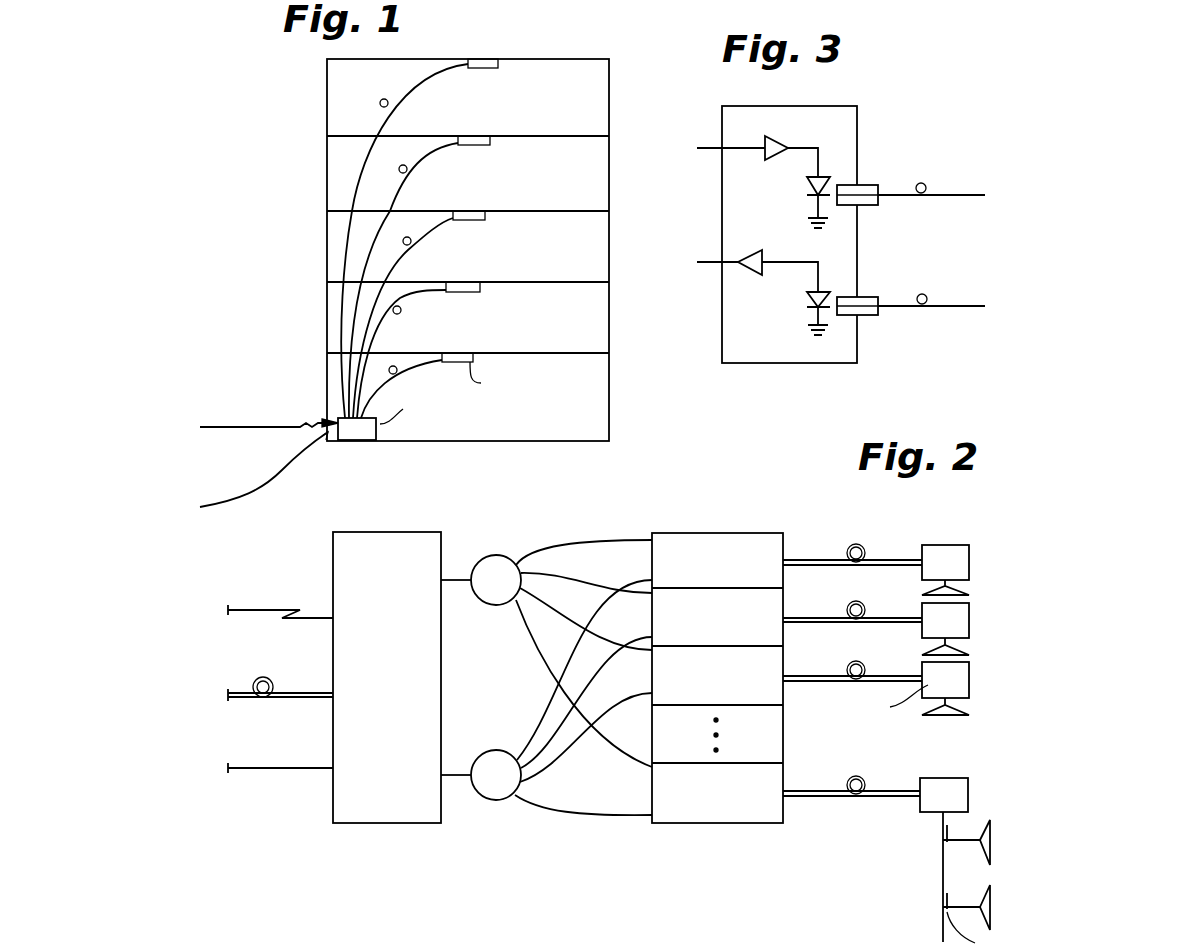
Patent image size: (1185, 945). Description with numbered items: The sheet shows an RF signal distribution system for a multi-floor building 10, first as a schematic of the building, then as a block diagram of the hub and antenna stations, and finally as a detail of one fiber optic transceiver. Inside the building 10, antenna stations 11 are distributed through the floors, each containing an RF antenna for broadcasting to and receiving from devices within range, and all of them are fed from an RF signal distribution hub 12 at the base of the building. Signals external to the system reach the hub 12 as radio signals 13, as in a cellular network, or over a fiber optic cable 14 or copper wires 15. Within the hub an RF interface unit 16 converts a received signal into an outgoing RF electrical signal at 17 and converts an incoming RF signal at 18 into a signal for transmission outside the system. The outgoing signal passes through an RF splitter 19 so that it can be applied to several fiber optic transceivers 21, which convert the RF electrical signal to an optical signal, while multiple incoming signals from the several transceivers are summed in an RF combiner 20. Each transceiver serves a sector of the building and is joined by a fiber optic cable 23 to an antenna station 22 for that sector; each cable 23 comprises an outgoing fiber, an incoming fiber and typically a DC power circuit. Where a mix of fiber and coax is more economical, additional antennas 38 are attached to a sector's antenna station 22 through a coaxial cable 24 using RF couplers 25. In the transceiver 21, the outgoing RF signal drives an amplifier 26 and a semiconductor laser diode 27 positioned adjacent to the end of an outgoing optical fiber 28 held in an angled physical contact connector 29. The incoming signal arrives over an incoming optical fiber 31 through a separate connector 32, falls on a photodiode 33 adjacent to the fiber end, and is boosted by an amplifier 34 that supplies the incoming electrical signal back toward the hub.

In FIG. 1, the multi-floor building 10 is at (609, 312).
In FIG. 1, the antenna station 11 is at (486, 59).
In FIG. 1, the RF signal distribution hub 12 is at (362, 437).
In FIG. 1, the radio signals 13 is at (247, 425).
In FIG. 2, the radio signals 13 is at (265, 608).
In FIG. 1, the fiber optic cable 14 is at (266, 481).
In FIG. 2, the fiber optic cable 14 is at (298, 690).
In FIG. 2, the copper wires 15 is at (301, 750).
In FIG. 2, the RF interface unit 16 is at (392, 823).
In FIG. 2, the outgoing RF electrical signal 17 is at (452, 578).
In FIG. 2, the incoming RF signal 18 is at (465, 770).
In FIG. 2, the RF splitter 19 is at (492, 607).
In FIG. 2, the RF combiner 20 is at (505, 800).
In FIG. 3, the fiber optic transceiver 21 is at (857, 345).
In FIG. 2, the fiber optic transceiver 21 is at (742, 815).
In FIG. 2, the antenna station 22 is at (969, 552).
In FIG. 2, the fiber optic cable 23 is at (868, 547).
In FIG. 2, the coaxial cable 24 is at (943, 858).
In FIG. 2, the RF coupler 25 is at (984, 928).
In FIG. 3, the amplifier 26 is at (780, 142).
In FIG. 3, the semiconductor laser diode 27 is at (826, 182).
In FIG. 3, the outgoing optical fiber 28 is at (950, 188).
In FIG. 3, the angled physical contact connector 29 is at (860, 186).
In FIG. 3, the incoming optical fiber 31 is at (942, 305).
In FIG. 3, the connector 32 is at (862, 297).
In FIG. 3, the photodiode 33 is at (805, 297).
In FIG. 3, the amplifier 34 is at (750, 252).
In FIG. 2, the antenna 38 is at (962, 593).